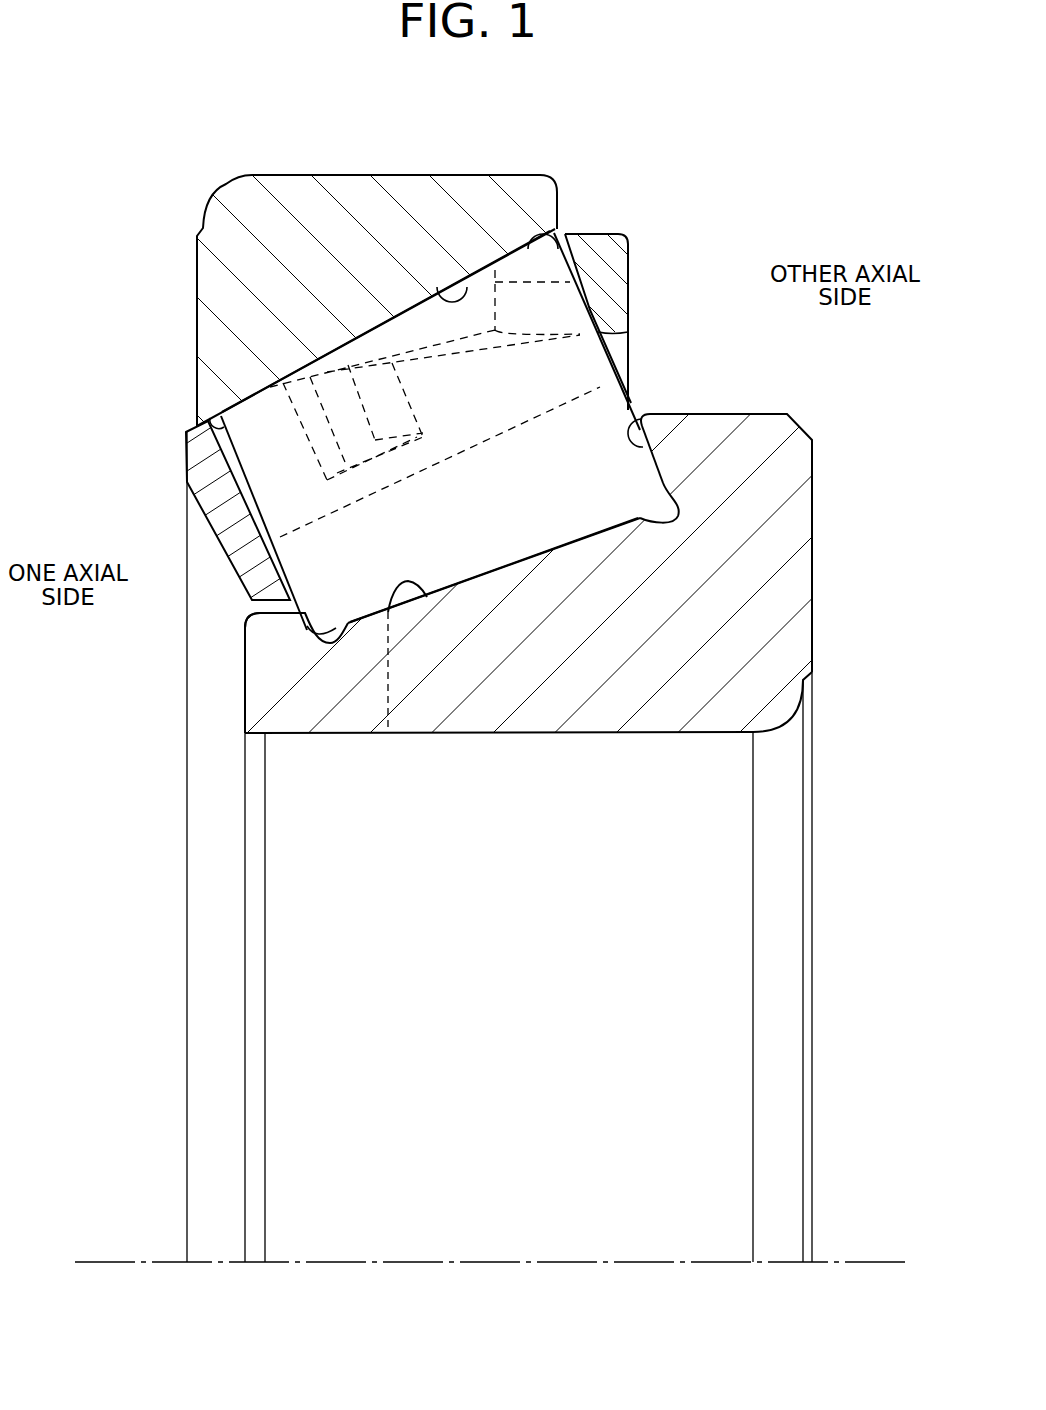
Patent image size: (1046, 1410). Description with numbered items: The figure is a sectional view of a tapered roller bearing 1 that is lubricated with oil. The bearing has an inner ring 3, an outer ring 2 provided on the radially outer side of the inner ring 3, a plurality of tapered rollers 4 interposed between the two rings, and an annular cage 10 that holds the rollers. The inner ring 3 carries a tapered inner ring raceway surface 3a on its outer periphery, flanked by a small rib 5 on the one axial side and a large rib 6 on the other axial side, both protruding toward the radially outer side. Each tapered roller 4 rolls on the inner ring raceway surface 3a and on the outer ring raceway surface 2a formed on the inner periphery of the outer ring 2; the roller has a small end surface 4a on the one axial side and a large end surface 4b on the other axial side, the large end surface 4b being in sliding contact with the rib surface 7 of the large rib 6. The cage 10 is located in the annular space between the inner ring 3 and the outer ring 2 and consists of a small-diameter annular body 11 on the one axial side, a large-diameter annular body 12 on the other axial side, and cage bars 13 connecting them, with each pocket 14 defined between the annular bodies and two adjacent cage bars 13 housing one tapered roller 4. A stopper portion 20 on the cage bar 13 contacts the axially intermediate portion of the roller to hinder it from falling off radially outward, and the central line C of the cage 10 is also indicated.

The tapered roller bearing 1 is at (215, 189).
The outer ring 2 is at (380, 198).
The outer ring raceway surface 2a is at (467, 284).
The inner ring 3 is at (468, 707).
The inner ring raceway surface 3a is at (405, 588).
The tapered roller 4 is at (507, 522).
The small end surface 4a is at (250, 500).
The large end surface 4b is at (617, 380).
The small rib 5 is at (265, 690).
The large rib 6 is at (780, 525).
The rib surface 7 is at (643, 418).
The cage 10 is at (600, 223).
The small-diameter annular body 11 is at (203, 453).
The large-diameter annular body 12 is at (614, 278).
The cage bar 13 is at (442, 390).
The pocket 14 is at (542, 303).
The stopper portion 20 is at (311, 377).
The central line C is at (884, 1262).